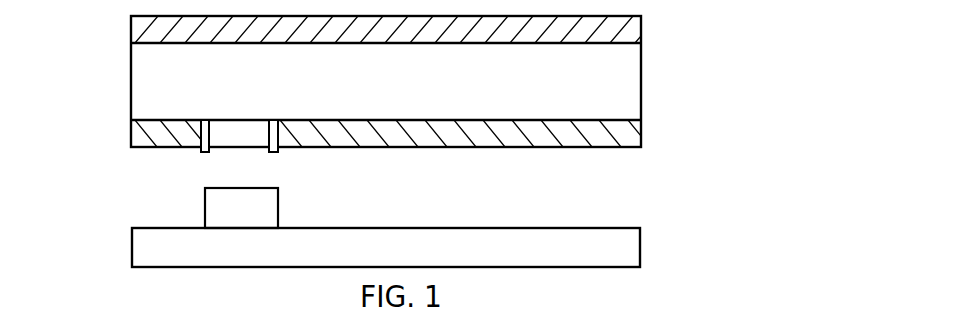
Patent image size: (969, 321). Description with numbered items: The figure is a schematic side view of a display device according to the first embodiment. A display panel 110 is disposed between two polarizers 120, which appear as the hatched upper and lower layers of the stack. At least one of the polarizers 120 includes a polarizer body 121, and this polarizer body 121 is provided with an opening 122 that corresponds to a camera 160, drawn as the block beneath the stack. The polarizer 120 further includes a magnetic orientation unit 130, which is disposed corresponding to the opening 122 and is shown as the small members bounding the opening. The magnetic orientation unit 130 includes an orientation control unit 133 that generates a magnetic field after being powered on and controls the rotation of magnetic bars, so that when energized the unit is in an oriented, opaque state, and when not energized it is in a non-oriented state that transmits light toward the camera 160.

The display panel 110 is at (630, 82).
The polarizer 120 is at (632, 28).
The polarizer body 121 is at (628, 131).
The opening 122 is at (282, 123).
The magnetic orientation unit 130 is at (230, 133).
The orientation control unit 133 is at (200, 133).
The camera 160 is at (263, 205).